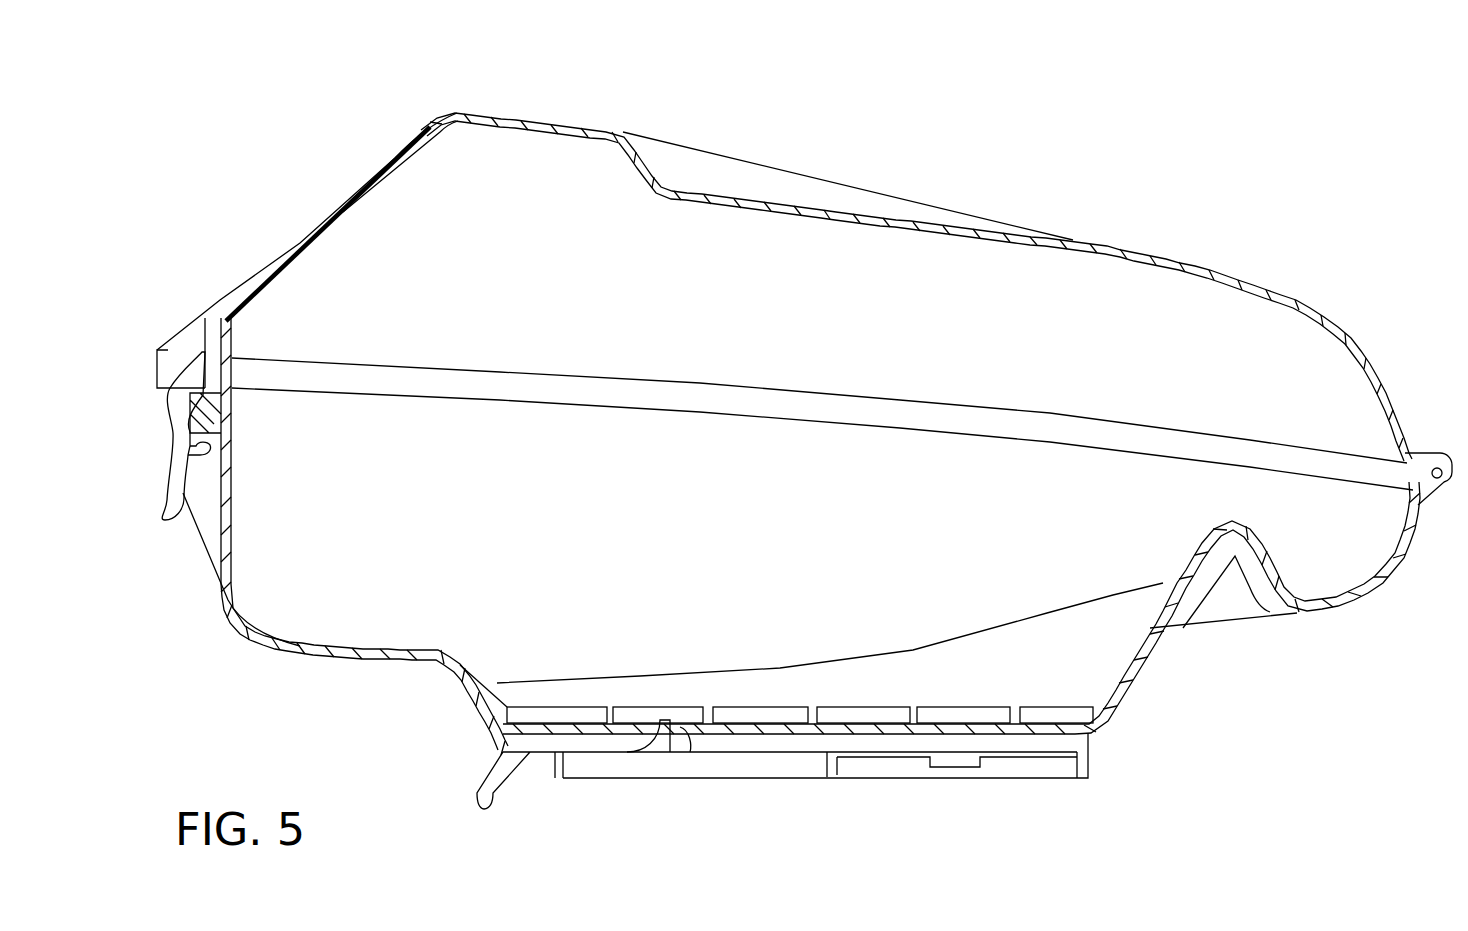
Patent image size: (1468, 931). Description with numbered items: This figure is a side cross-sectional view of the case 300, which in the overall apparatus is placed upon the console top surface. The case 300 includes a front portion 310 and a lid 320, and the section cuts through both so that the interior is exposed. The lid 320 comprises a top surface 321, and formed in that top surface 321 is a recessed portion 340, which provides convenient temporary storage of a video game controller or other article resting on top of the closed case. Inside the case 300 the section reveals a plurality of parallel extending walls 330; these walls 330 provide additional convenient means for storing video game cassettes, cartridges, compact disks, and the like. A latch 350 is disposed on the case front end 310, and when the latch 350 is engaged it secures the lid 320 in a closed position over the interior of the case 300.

The case 300 is at (1061, 177).
The front portion 310 is at (328, 684).
The lid 320 is at (295, 189).
The top surface 321 is at (571, 107).
The parallel extending walls 330 is at (933, 706).
The recessed portion 340 is at (717, 163).
The latch 350 is at (169, 542).